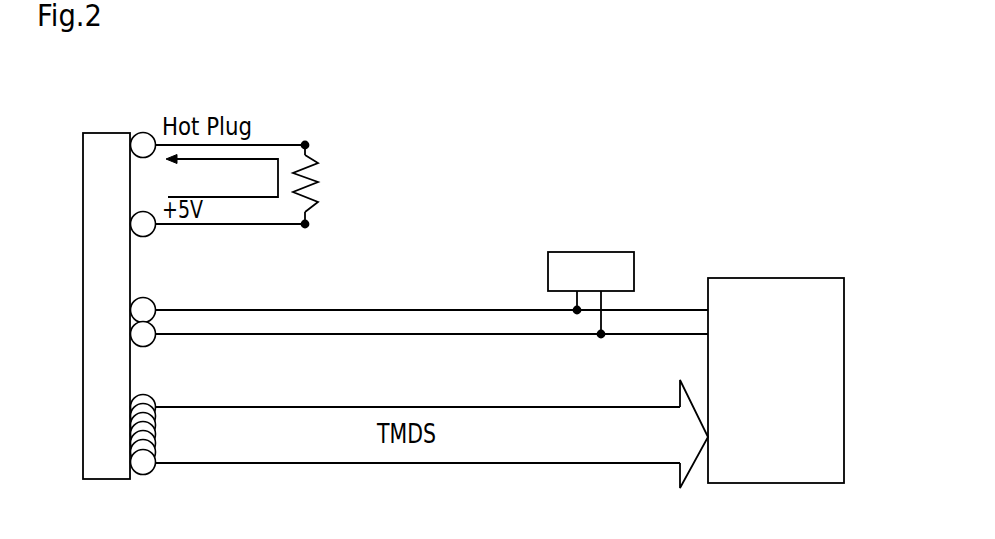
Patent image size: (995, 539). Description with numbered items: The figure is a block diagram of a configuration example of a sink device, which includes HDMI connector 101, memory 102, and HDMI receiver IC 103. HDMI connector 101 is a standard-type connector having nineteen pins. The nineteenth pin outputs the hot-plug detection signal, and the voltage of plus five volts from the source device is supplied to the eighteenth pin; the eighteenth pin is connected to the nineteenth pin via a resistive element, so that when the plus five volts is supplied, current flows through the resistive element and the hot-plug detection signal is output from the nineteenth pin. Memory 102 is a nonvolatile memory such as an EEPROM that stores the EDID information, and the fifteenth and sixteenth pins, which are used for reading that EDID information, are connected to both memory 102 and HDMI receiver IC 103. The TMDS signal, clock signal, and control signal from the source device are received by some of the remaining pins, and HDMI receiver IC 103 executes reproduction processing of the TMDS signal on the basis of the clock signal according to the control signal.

The HDMI connector 101 is at (105, 133).
The memory 102 is at (590, 248).
The HDMI receiver IC 103 is at (770, 278).